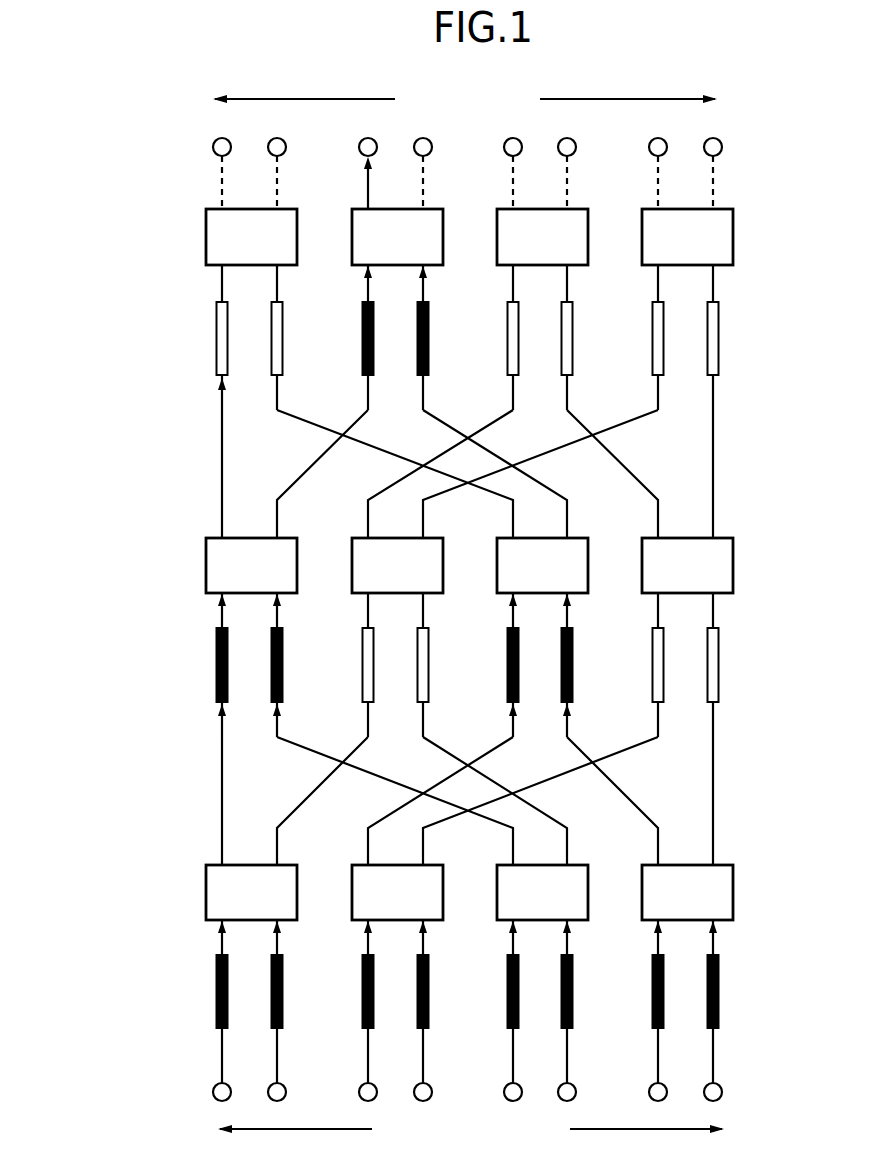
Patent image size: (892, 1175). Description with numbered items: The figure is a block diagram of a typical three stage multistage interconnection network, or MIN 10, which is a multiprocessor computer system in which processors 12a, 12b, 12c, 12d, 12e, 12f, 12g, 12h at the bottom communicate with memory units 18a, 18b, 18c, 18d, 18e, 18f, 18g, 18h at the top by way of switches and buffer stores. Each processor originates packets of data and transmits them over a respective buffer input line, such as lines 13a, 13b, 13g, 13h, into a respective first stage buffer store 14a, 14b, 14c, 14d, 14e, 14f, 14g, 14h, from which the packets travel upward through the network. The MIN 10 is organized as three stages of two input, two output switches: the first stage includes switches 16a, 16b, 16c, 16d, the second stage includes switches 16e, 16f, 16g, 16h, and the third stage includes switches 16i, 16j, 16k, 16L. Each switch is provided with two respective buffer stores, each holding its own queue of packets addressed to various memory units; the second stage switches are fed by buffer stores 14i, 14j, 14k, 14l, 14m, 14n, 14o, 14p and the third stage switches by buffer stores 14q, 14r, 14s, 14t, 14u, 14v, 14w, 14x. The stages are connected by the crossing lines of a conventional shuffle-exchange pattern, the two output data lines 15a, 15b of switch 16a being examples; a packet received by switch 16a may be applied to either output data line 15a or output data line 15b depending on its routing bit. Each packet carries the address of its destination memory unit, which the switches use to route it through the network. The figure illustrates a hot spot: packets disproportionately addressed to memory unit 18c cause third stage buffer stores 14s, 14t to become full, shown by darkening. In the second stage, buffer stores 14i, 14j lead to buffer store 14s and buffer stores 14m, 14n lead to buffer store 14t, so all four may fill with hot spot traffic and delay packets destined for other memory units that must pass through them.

The MIN 10 is at (150, 97).
The processor 12a is at (213, 1091).
The processor 12b is at (286, 1092).
The processor 12c is at (361, 1086).
The processor 12d is at (430, 1086).
The processor 12e is at (504, 1091).
The processor 12f is at (576, 1093).
The processor 12g is at (651, 1085).
The processor 12h is at (722, 1091).
The buffer input line 13a is at (220, 1053).
The buffer input line 13b is at (278, 1053).
The buffer input line 13g is at (660, 1070).
The buffer input line 13h is at (720, 1060).
The buffer store 14a is at (217, 966).
The buffer store 14b is at (283, 980).
The buffer store 14c is at (363, 991).
The buffer store 14d is at (429, 1006).
The buffer store 14e is at (508, 977).
The buffer store 14f is at (573, 985).
The buffer store 14g is at (653, 997).
The buffer store 14h is at (720, 1012).
The buffer store 14i is at (216, 658).
The buffer store 14j is at (283, 666).
The buffer store 14k is at (363, 687).
The buffer store 14l is at (428, 688).
The buffer store 14m is at (508, 652).
The buffer store 14n is at (574, 656).
The buffer store 14o is at (653, 687).
The buffer store 14p is at (720, 687).
The buffer store 14q is at (216, 329).
The buffer store 14r is at (281, 345).
The buffer store 14s is at (363, 352).
The buffer store 14t is at (428, 353).
The buffer store 14u is at (508, 334).
The buffer store 14v is at (573, 338).
The buffer store 14w is at (665, 340).
The buffer store 14x is at (719, 352).
The output data line 15a is at (220, 788).
The output data line 15b is at (291, 815).
The switch 16a is at (211, 864).
The switch 16b is at (355, 864).
The switch 16c is at (502, 864).
The switch 16d is at (647, 864).
The switch 16e is at (207, 537).
The switch 16f is at (353, 537).
The switch 16g is at (499, 537).
The switch 16h is at (647, 537).
The switch 16i is at (297, 243).
The switch 16j is at (443, 243).
The switch 16k is at (588, 243).
The switch 16L is at (733, 243).
The memory unit 18a is at (214, 140).
The memory unit 18b is at (273, 128).
The memory unit 18c is at (363, 128).
The memory unit 18d is at (436, 130).
The memory unit 18e is at (522, 130).
The memory unit 18f is at (573, 140).
The memory unit 18g is at (669, 130).
The memory unit 18h is at (724, 130).